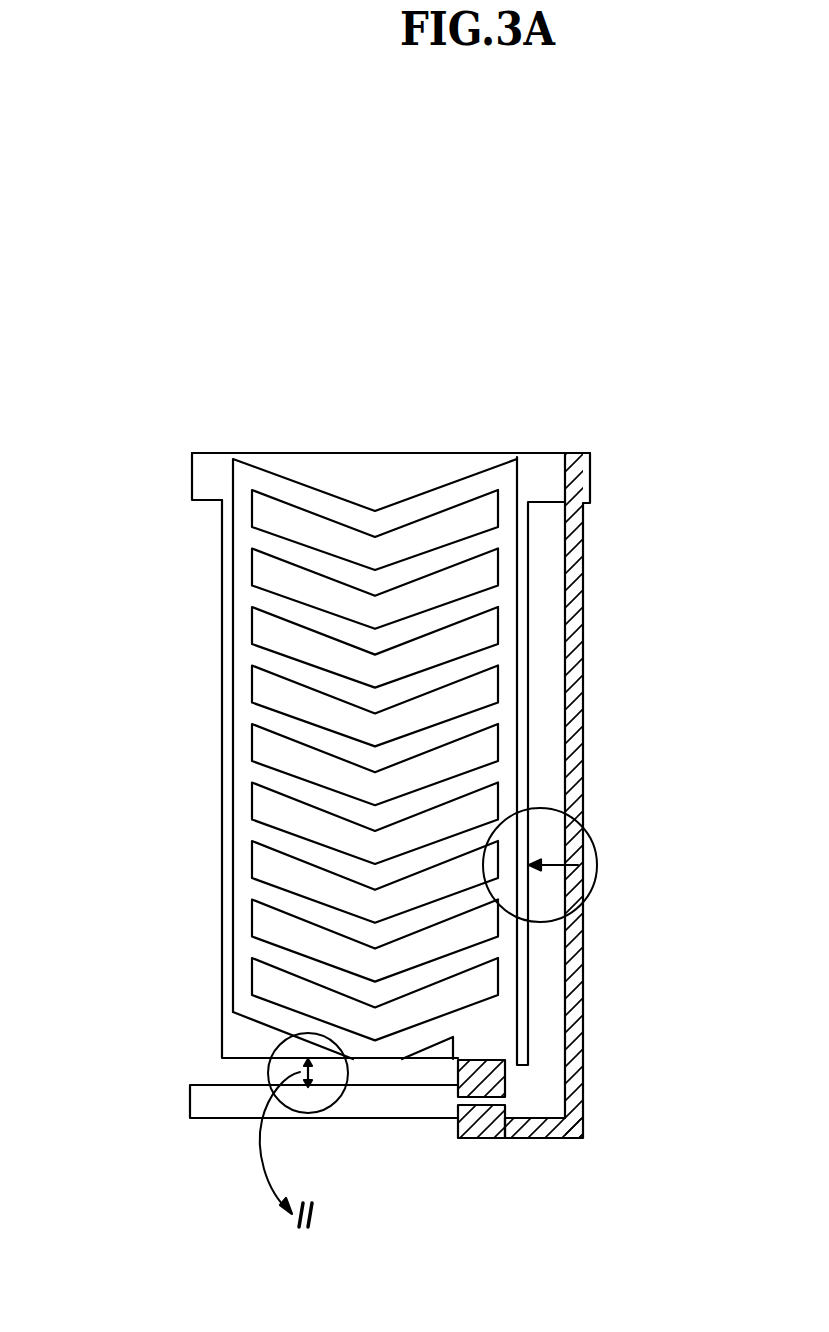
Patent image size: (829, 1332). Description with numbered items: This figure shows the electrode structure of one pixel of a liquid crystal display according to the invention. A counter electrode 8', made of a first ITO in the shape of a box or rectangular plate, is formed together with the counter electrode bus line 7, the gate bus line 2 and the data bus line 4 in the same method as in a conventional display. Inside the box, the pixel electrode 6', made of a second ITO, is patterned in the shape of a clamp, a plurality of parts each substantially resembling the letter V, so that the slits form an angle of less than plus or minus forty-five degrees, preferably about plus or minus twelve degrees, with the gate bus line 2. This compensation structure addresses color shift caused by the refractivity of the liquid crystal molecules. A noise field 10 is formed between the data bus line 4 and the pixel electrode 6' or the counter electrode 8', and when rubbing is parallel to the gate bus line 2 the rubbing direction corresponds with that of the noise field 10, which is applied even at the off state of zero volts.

The counter electrode bus line 7 is at (203, 483).
The counter electrode 8' is at (333, 755).
The pixel electrode 6' is at (287, 759).
The data bus line 4 is at (586, 548).
The noise field 10 is at (548, 858).
The gate bus line 2 is at (207, 1093).